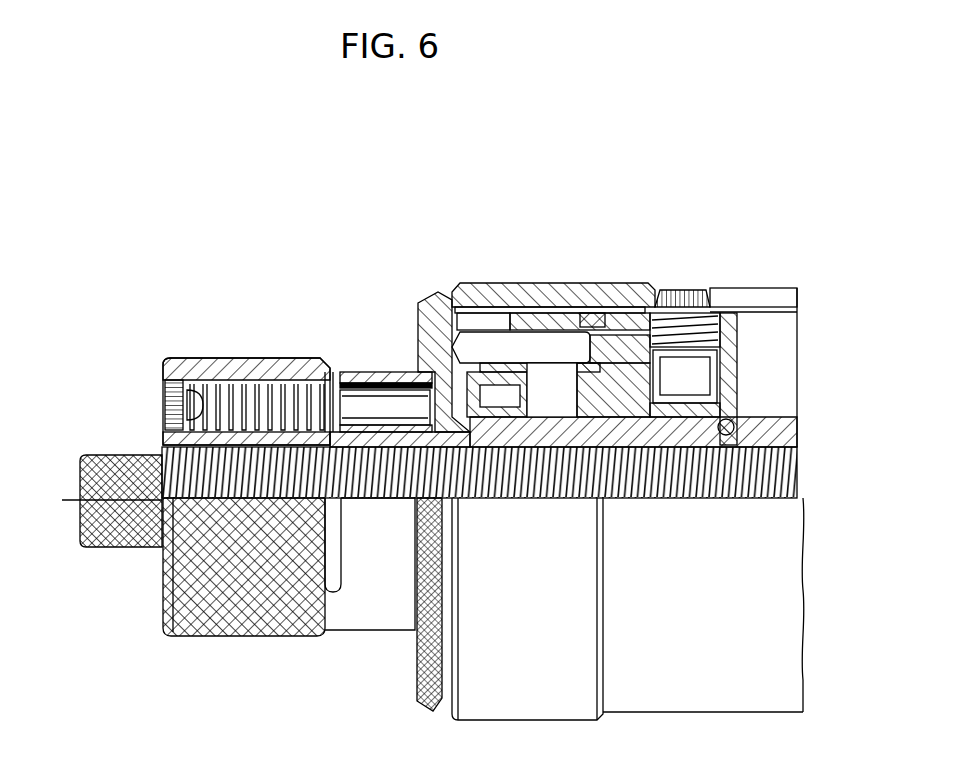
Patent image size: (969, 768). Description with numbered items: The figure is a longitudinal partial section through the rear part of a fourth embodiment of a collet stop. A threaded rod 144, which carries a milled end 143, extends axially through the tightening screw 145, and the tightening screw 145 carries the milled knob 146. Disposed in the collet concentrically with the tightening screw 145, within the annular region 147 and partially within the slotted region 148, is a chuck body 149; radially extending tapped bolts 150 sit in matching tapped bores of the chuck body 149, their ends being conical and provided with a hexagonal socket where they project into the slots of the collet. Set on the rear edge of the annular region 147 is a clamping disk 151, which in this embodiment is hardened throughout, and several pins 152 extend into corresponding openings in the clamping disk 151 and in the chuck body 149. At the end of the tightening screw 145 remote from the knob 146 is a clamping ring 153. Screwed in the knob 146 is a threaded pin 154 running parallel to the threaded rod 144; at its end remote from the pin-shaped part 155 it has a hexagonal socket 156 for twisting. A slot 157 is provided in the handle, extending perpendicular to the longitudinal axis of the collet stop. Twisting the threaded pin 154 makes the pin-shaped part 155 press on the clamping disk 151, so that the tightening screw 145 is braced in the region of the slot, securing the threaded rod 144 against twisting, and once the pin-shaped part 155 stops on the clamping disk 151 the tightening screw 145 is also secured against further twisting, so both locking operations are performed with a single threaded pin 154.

The milled end 143 is at (93, 455).
The threaded rod 144 is at (800, 473).
The tightening screw 145 is at (482, 503).
The milled knob 146 is at (243, 612).
The annular region 147 is at (558, 298).
The slotted region 148 is at (743, 290).
The chuck body 149 is at (630, 503).
The tapped bolts 150 is at (645, 290).
The clamping disk 151 is at (418, 305).
The pins 152 is at (485, 340).
The clamping ring 153 is at (737, 425).
The threaded pin 154 is at (227, 358).
The pin-shaped part 155 is at (358, 372).
The hexagonal socket 156 is at (165, 403).
The slot 157 is at (336, 594).